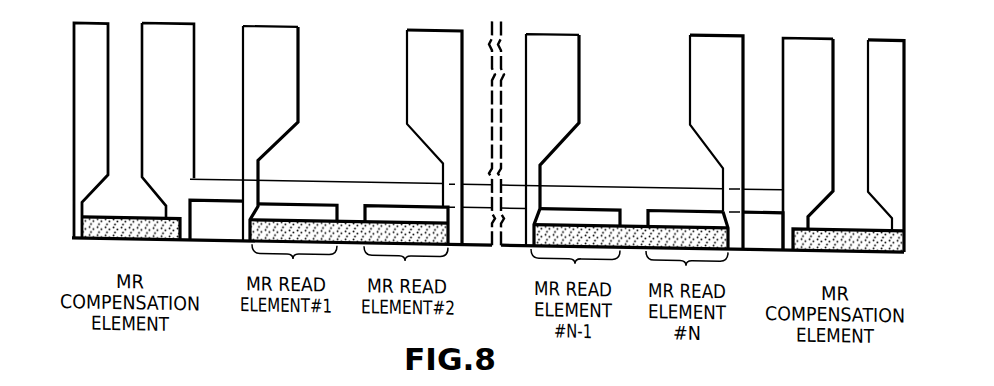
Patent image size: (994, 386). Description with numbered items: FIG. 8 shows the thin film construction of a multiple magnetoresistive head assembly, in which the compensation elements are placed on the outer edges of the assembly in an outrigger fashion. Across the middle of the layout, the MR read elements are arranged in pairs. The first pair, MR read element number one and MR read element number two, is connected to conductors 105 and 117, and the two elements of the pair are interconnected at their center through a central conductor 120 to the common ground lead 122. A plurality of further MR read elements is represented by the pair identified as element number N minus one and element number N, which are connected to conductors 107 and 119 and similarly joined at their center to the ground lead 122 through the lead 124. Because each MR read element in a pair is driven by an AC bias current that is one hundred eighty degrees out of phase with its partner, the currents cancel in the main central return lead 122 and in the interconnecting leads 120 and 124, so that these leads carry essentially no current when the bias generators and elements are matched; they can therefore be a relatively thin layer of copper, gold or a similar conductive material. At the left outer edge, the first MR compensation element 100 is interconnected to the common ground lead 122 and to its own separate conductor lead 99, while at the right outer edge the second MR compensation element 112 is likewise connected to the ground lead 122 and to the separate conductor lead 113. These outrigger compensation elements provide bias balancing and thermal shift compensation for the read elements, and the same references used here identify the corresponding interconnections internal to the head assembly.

The conductor lead 99 is at (85, 80).
The first MR compensation element 100 is at (93, 239).
The conductor 105 is at (287, 66).
The conductor 117 is at (420, 70).
The central conductor 120 is at (355, 207).
The ground lead 122 is at (313, 183).
The conductor 107 is at (565, 80).
The lead 124 is at (635, 215).
The conductor 119 is at (700, 75).
The conductor lead 113 is at (893, 108).
The second MR compensation element 112 is at (857, 253).